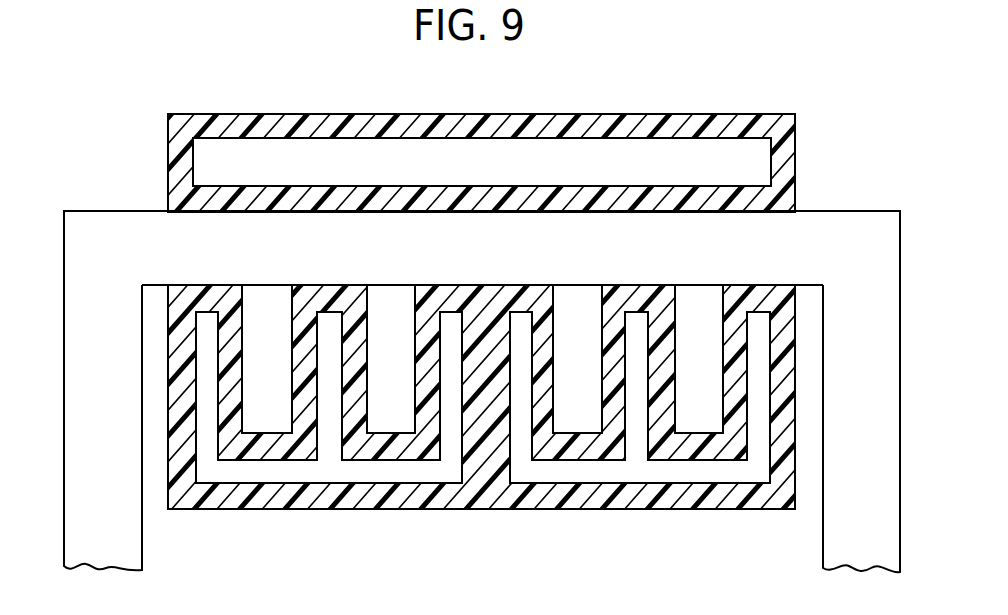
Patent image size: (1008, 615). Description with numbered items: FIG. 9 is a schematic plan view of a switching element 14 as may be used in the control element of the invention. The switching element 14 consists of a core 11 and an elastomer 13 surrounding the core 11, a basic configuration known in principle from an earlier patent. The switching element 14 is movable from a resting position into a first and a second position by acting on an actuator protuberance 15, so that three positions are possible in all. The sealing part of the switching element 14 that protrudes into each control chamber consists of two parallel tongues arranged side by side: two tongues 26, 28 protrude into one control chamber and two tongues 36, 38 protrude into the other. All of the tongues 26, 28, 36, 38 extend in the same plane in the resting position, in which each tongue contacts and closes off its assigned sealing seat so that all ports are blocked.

The core 11 is at (550, 235).
The elastomer 13 is at (783, 160).
The switching element 14 is at (479, 124).
The actuator protuberance 15 is at (125, 547).
The tongue 26 is at (276, 413).
The tongue 28 is at (393, 418).
The tongue 36 is at (588, 420).
The tongue 38 is at (705, 418).